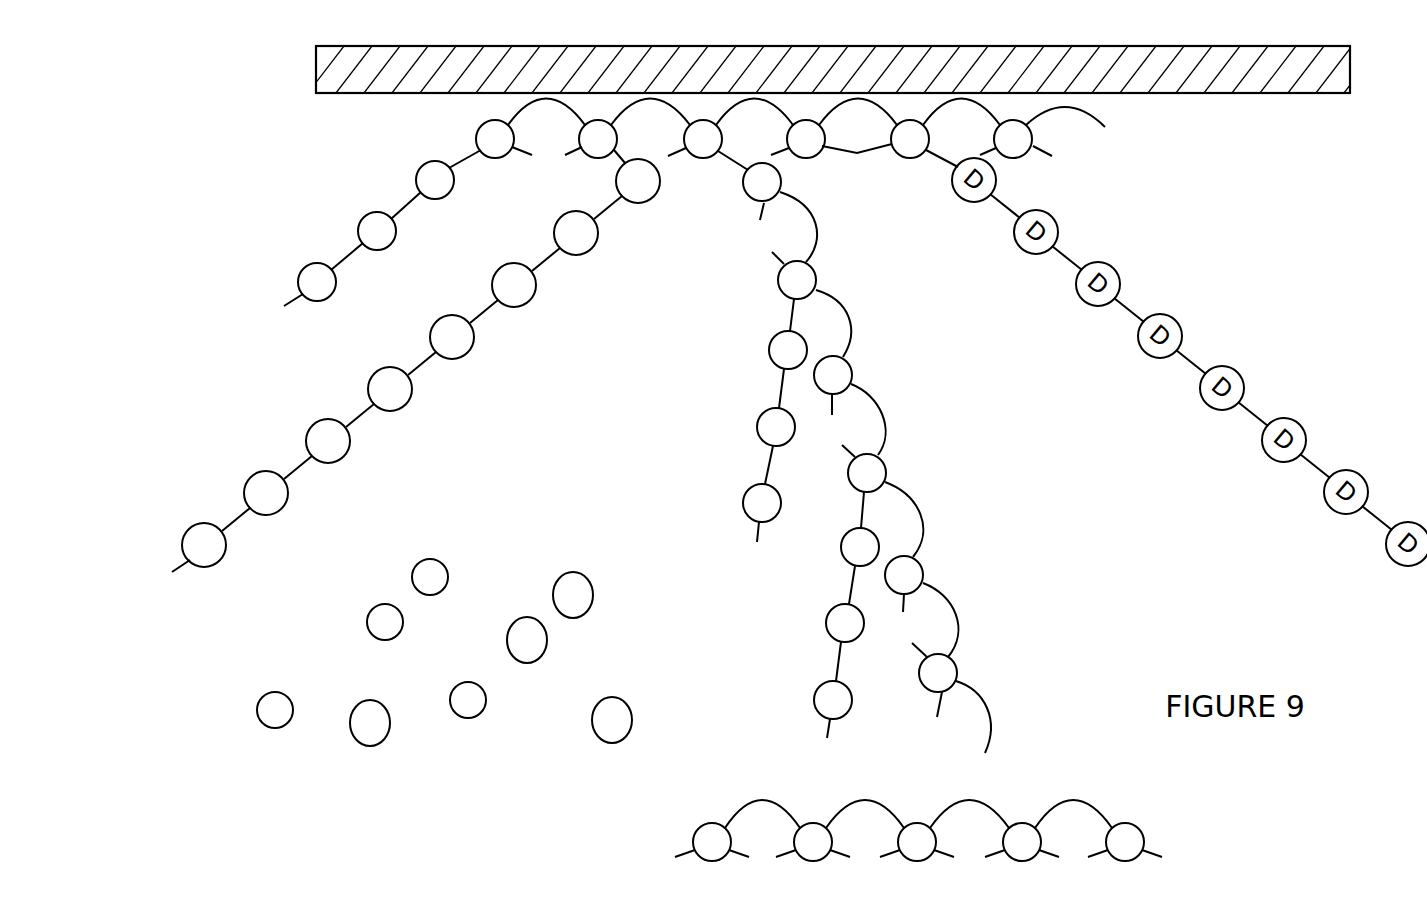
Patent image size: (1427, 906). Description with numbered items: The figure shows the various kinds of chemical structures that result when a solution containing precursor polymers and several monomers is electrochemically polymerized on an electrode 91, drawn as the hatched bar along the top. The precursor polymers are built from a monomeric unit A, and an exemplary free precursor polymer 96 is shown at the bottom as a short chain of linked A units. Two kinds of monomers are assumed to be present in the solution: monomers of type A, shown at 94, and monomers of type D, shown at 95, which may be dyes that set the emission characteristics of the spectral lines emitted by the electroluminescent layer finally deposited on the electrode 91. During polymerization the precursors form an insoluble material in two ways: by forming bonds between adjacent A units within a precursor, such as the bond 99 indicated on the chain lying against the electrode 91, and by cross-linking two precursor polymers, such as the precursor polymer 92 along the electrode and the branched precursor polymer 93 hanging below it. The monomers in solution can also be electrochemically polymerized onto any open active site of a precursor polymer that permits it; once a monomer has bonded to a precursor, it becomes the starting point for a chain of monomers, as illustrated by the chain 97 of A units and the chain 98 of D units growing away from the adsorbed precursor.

The electrode 91 is at (316, 68).
The precursor polymer 92 is at (1030, 135).
The precursor polymer 93 is at (956, 667).
The monomer of type A 94 is at (438, 566).
The monomer of type D 95 is at (592, 592).
The precursor polymer 96 is at (1142, 833).
The chain of monomers 97 is at (306, 264).
The chain of monomers 98 is at (474, 338).
The bond between adjacent A's 99 is at (863, 156).